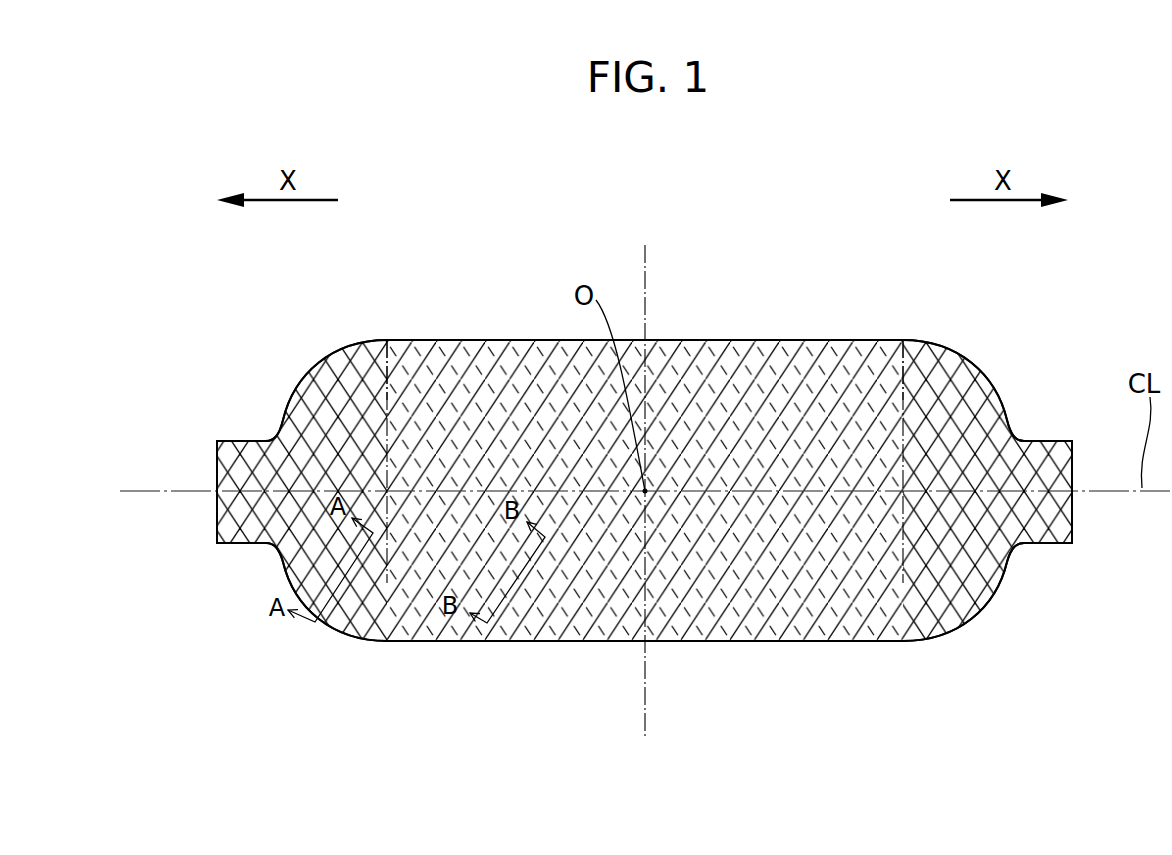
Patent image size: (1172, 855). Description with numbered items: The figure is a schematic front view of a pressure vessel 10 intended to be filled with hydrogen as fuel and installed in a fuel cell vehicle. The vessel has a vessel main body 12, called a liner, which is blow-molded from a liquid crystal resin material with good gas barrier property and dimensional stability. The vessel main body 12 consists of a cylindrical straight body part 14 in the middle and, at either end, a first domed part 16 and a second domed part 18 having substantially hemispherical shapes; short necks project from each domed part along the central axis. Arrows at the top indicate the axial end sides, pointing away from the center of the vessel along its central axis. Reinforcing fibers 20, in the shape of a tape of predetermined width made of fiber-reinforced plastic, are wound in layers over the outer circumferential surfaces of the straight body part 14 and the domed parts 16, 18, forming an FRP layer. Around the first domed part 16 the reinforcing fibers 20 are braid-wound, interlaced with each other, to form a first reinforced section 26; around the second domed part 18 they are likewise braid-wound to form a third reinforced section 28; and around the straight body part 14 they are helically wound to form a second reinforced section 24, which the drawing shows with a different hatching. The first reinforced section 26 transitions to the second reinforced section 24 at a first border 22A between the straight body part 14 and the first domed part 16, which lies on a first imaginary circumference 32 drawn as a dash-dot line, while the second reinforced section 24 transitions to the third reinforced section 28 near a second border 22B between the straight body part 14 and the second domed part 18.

The pressure vessel 10 is at (879, 309).
The vessel main body 12 is at (717, 643).
The straight body part 14 is at (596, 662).
The first domed part 16 is at (327, 643).
The second domed part 18 is at (970, 635).
The reinforcing fibers 20 is at (342, 362).
The first border 22A is at (392, 330).
The second border 22B is at (909, 330).
The second reinforced section 24 is at (645, 705).
The first reinforced section 26 is at (302, 542).
The third reinforced section 28 is at (994, 539).
The first imaginary circumference 32 is at (387, 583).